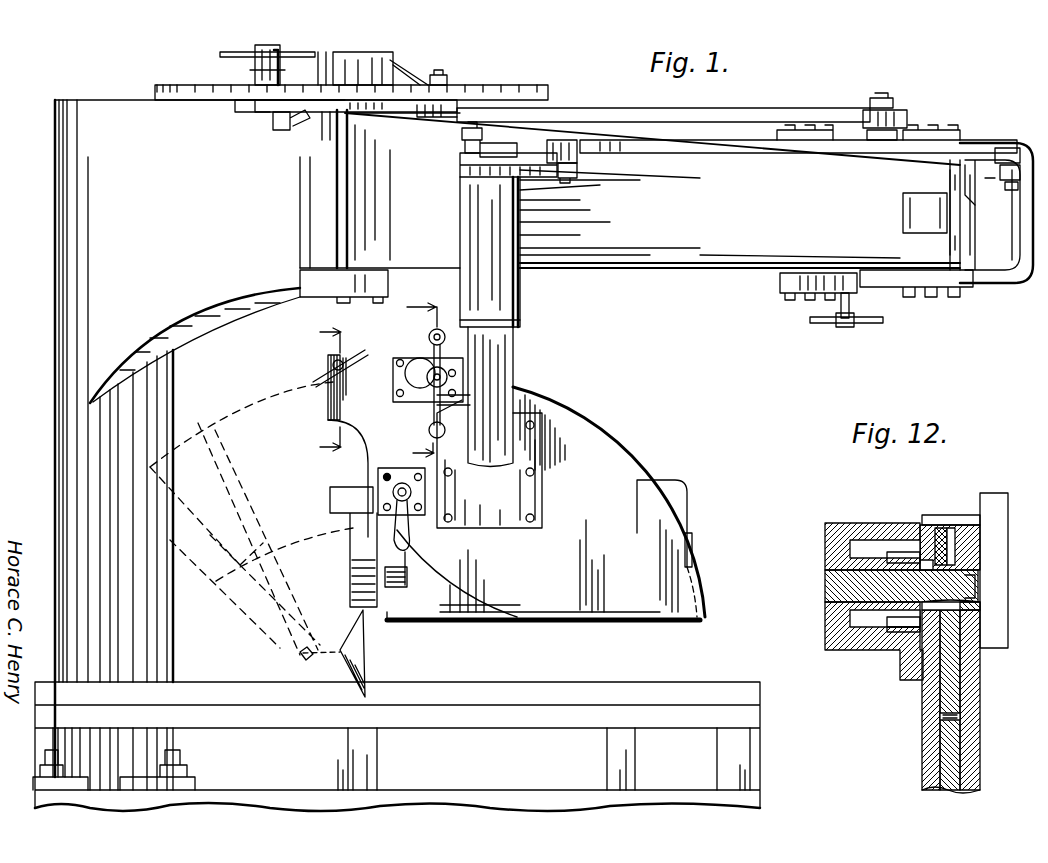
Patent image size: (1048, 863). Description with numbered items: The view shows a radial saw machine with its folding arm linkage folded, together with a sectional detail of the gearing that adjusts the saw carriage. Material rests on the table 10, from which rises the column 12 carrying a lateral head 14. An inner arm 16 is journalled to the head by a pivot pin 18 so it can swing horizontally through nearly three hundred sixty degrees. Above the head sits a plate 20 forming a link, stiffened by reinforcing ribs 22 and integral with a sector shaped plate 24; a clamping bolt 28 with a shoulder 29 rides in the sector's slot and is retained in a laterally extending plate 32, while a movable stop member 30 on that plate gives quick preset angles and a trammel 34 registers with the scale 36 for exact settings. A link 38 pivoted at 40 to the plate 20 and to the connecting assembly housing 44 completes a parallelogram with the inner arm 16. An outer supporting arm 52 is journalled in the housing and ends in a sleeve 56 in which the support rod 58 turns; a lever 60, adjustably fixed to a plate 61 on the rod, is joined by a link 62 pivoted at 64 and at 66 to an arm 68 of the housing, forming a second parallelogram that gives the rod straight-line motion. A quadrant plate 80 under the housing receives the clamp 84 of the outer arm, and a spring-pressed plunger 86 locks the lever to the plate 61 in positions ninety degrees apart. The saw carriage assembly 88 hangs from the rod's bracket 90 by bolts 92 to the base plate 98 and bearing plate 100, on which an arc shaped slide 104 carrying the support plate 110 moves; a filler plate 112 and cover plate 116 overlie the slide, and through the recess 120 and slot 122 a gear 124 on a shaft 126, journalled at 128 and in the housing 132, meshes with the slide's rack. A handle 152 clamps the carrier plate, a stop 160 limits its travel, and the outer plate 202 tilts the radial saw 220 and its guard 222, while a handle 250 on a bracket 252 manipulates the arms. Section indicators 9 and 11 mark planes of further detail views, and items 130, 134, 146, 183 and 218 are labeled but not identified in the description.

In FIG. 1, the section line 9- 9 is at (414, 381).
In FIG. 1, the table or platform 10 is at (273, 712).
In FIG. 1, the section line 11- 11 is at (318, 391).
In FIG. 1, the column 12 is at (140, 508).
In FIG. 1, the head 14 is at (262, 280).
In FIG. 1, the inner arm 16 is at (380, 189).
In FIG. 1, the pivot pin 18 is at (357, 266).
In FIG. 1, the plate 20 is at (352, 72).
In FIG. 1, the reinforcing ribs 22 is at (406, 80).
In FIG. 1, the sector shaped plate 24 is at (318, 85).
In FIG. 1, the clamping bolt 28 is at (255, 73).
In FIG. 1, the shoulder 29 is at (281, 82).
In FIG. 1, the movable stop member 30 is at (290, 128).
In FIG. 1, the laterally extending plate 32 is at (332, 110).
In FIG. 1, the trammel 34 is at (258, 112).
In FIG. 1, the index or scale 36 is at (174, 85).
In FIG. 1, the link 38 is at (675, 116).
In FIG. 1, the pivot connection 40 is at (441, 74).
In FIG. 1, the connecting assembly housing 44 is at (1003, 270).
In FIG. 1, the outer supporting arm 52 is at (640, 253).
In FIG. 1, the tubular bushing or sleeve 56 is at (518, 302).
In FIG. 1, the support rod 58 is at (510, 345).
In FIG. 1, the link or lever 60 is at (540, 165).
In FIG. 1, the plate 61 is at (465, 172).
In FIG. 1, the link 62 is at (648, 140).
In FIG. 1, the pivot connection 64 is at (574, 180).
In FIG. 1, the pivot 66 is at (1018, 185).
In FIG. 1, the arm 68 is at (995, 180).
In FIG. 1, the quadrant shaped plate 80 is at (860, 290).
In FIG. 1, the locking bolt or clamp 84 is at (840, 325).
In FIG. 1, the spring-pressed plunger 86 is at (462, 133).
In FIG. 1, the saw carriage assembly 88 is at (627, 455).
In FIG. 1, the support bracket 90 is at (495, 528).
In FIG. 1, the bolts 92 is at (535, 518).
In FIG. 1, the base plate 98 is at (565, 440).
In FIG. 12, the base plate 98 is at (928, 700).
In FIG. 12, the bearing plate 100 is at (948, 762).
In FIG. 12, the slide 104 is at (955, 672).
In FIG. 12, the support plate 110 is at (962, 720).
In FIG. 12, the spacer or filler plate 112 is at (941, 530).
In FIG. 12, the cover plate 116 is at (970, 548).
In FIG. 12, the recess 120 is at (952, 535).
In FIG. 12, the slot 122 is at (915, 545).
In FIG. 12, the gear 124 is at (975, 608).
In FIG. 12, the shaft 126 is at (970, 585).
In FIG. 12, the journal 128 is at (978, 606).
In FIG. 12, the shaft 130 is at (840, 586).
In FIG. 1, the housing 132 is at (398, 380).
In FIG. 12, the housing 132 is at (845, 625).
In FIG. 12, the spring 134 is at (895, 622).
In FIG. 1, the lever 146 is at (447, 400).
In FIG. 1, the handle 152 is at (315, 377).
In FIG. 12, the stop 160 is at (998, 500).
In FIG. 12, the seal 183 is at (930, 530).
In FIG. 1, the outer plate 202 is at (200, 440).
In FIG. 1, the flap 218 is at (660, 490).
In FIG. 1, the radial saw 220 is at (325, 650).
In FIG. 1, the guard or shield 222 is at (353, 574).
In FIG. 1, the telescopically adjustable handle 250 is at (408, 545).
In FIG. 1, the bracket 252 is at (385, 476).